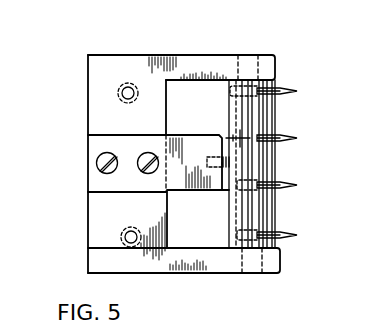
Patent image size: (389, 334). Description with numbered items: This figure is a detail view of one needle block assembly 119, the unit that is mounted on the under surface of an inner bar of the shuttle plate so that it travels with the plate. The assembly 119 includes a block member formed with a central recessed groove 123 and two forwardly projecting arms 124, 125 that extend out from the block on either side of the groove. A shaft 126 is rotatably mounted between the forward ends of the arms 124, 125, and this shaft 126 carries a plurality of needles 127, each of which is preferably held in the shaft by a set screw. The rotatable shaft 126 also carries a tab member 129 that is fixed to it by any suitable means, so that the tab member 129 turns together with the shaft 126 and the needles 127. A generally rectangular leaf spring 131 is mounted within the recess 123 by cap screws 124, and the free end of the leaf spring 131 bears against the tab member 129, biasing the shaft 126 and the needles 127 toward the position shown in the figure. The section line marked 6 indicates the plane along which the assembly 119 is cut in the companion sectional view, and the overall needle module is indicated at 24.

The needle module frame 24 is at (218, 52).
The needle block assembly 119 is at (128, 70).
The central recessed groove 123 is at (88, 133).
The forwardly projecting arm 124 is at (99, 158).
The forwardly projecting arm 125 is at (200, 61).
The shaft 126 is at (268, 117).
The needles 127 is at (282, 87).
The tab member 129 is at (175, 225).
The leaf spring 131 is at (190, 143).
The section line 6- 6 is at (82, 165).